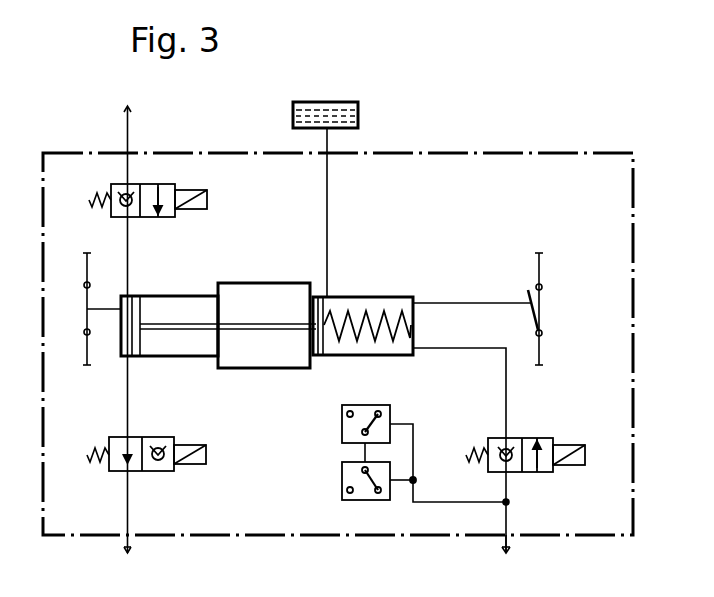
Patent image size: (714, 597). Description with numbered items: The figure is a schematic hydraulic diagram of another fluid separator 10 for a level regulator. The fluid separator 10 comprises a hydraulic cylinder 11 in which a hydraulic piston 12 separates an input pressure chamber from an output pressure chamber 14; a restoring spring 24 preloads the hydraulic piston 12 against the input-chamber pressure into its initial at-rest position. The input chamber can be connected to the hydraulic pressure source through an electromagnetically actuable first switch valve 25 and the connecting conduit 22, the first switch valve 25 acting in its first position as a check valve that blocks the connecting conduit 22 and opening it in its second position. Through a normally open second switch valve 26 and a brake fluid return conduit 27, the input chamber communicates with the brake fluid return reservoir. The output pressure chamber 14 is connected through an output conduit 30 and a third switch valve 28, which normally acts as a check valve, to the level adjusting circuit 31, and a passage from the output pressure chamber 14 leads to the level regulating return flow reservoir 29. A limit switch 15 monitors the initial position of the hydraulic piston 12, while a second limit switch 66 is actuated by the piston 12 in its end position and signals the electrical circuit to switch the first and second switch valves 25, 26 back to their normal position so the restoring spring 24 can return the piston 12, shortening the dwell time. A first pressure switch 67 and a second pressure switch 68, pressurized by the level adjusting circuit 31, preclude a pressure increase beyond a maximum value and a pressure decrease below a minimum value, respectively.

The fluid separator 10 is at (633, 172).
The hydraulic cylinder 11 is at (256, 283).
The hydraulic piston 12 is at (262, 331).
The output pressure chamber 14 is at (370, 347).
The limit switch 15 is at (85, 300).
The connecting conduit 22 is at (131, 121).
The restoring spring 24 is at (372, 305).
The first switch valve 25 is at (174, 217).
The second switch valve 26 is at (172, 471).
The brake fluid return conduit 27 is at (130, 547).
The third switch valve 28 is at (546, 438).
The level regulating return flow reservoir 29 is at (358, 116).
The output conduit 30 is at (445, 349).
The level adjusting circuit 31 is at (510, 548).
The second limit switch 66 is at (543, 310).
The first pressure switch 67 is at (342, 420).
The second pressure switch 68 is at (342, 480).